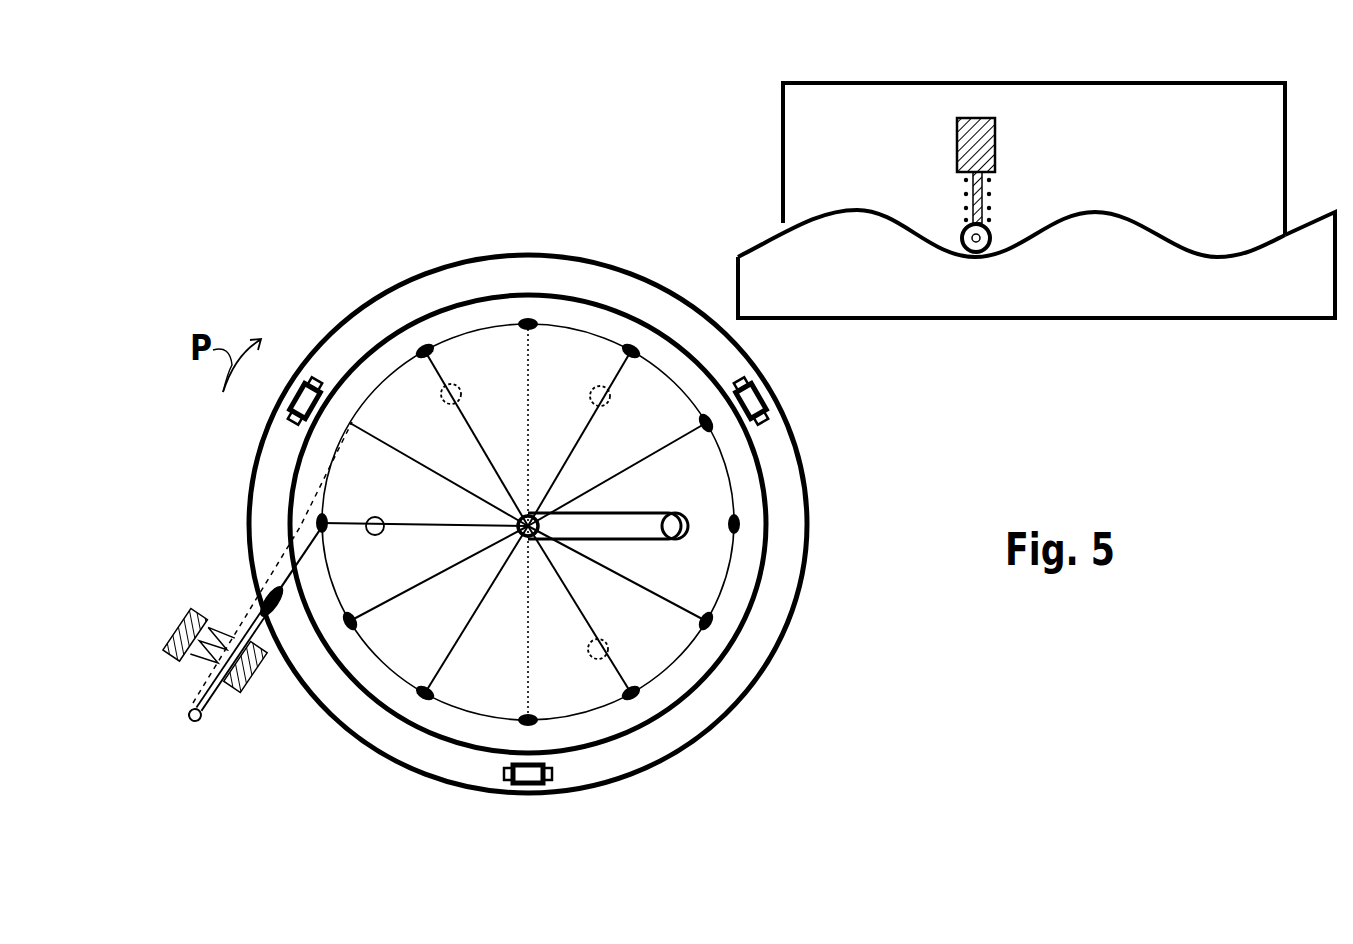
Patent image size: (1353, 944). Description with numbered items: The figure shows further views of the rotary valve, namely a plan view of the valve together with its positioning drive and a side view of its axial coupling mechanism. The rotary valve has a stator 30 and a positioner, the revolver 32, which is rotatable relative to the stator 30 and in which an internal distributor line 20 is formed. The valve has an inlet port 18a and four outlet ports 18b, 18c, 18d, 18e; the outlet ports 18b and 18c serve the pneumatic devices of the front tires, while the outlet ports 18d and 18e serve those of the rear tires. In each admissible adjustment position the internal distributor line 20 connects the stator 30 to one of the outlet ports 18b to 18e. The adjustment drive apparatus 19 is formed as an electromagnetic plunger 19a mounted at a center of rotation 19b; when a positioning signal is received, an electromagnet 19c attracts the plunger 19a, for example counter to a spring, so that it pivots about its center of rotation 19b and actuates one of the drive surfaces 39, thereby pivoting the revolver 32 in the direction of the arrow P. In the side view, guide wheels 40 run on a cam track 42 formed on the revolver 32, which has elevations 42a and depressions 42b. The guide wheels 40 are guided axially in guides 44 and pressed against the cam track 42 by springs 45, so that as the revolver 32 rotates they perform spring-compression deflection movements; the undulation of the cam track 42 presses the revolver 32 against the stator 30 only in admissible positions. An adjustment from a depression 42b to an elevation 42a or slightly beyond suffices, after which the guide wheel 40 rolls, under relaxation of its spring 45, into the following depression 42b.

The inlet port 18a is at (526, 538).
The outlet port 18b is at (746, 528).
The outlet port 18c is at (612, 655).
The outlet port 18d is at (452, 384).
The outlet port 18e is at (606, 386).
The adjustment drive apparatus 19 is at (298, 648).
The electromagnetic plunger 19a is at (227, 565).
The center of rotation 19b is at (188, 760).
The electromagnet 19c is at (170, 613).
The internal distributor line 20 is at (645, 517).
The stator 30 is at (792, 494).
The revolver 32 is at (688, 598).
The drive surfaces 39 is at (528, 318).
The guide wheels 40 is at (990, 234).
The cam track 42 is at (1140, 225).
The elevation 42a is at (1097, 210).
The depression 42b is at (1217, 255).
The guides 44 is at (1000, 165).
The springs 45 is at (965, 196).